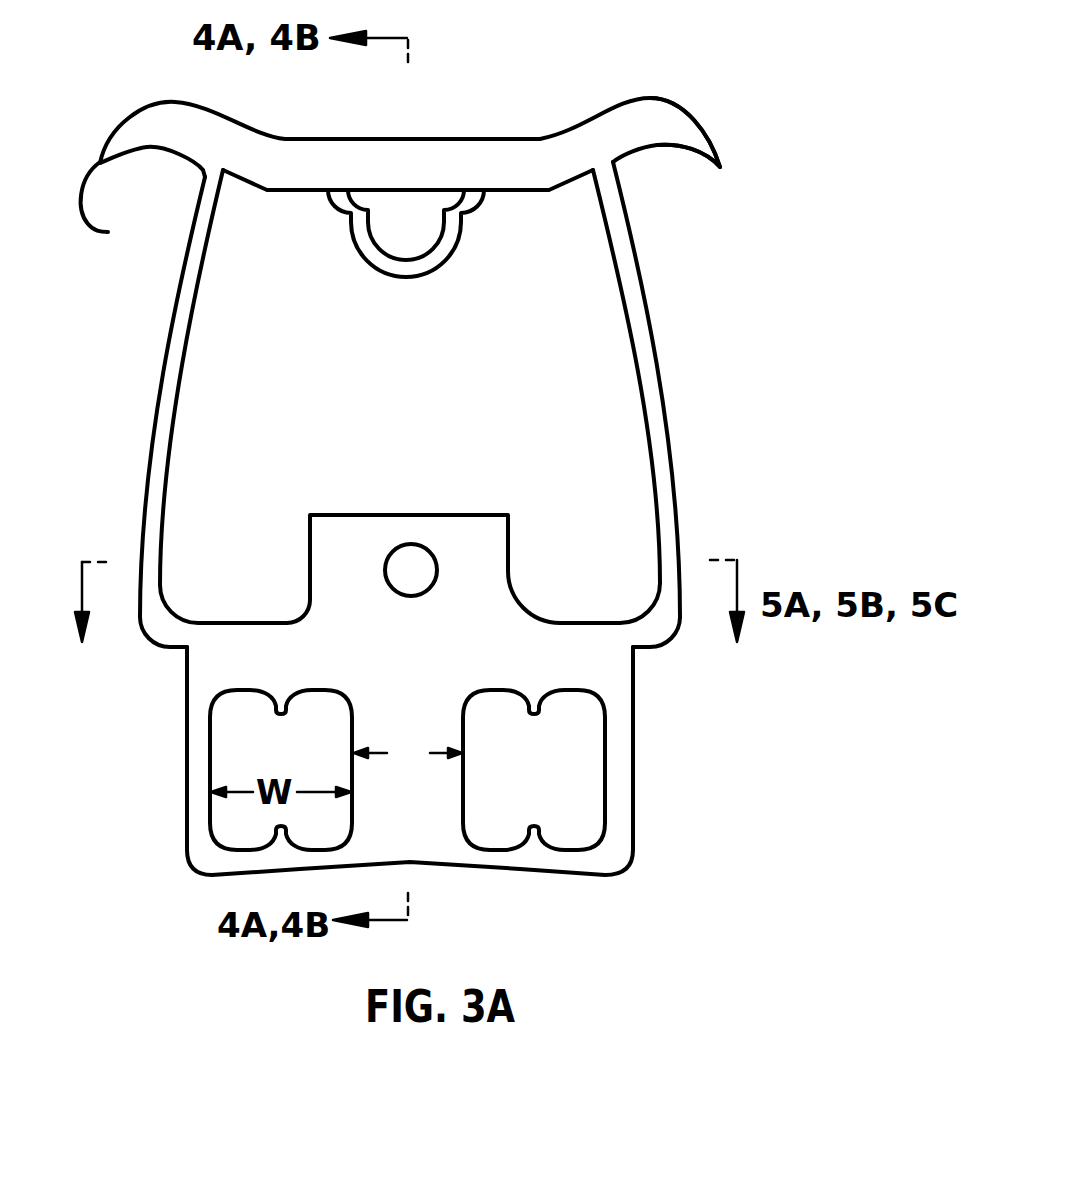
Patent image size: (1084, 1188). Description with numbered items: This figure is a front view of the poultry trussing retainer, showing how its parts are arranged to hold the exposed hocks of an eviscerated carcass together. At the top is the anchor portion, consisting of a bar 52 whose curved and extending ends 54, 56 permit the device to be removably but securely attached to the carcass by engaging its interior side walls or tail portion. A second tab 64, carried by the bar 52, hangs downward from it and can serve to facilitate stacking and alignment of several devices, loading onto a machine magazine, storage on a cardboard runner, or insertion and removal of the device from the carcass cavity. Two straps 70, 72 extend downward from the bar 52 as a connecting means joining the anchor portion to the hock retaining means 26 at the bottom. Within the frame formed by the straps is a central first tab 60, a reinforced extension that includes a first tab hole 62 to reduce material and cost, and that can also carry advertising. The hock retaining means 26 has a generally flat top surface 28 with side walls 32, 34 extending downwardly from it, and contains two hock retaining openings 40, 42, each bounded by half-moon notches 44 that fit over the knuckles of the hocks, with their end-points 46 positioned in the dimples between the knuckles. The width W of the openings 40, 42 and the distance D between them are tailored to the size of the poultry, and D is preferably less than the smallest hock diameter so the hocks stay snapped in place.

The hock retaining means 26 is at (475, 760).
The flat top surface 28 is at (427, 725).
The side wall 32 is at (740, 645).
The side wall 34 is at (187, 805).
The hock retaining opening 40 is at (210, 760).
The hock retaining opening 42 is at (573, 850).
The half-moon notches 44 is at (317, 687).
The end-points 46 is at (534, 826).
The bar 52 is at (387, 138).
The curved extending end 54 is at (121, 206).
The curved extending end 56 is at (724, 166).
The first tab 60 is at (347, 517).
The first tab hole 62 is at (430, 552).
The second tab 64 is at (410, 277).
The strap 70 is at (152, 452).
The strap 72 is at (657, 425).